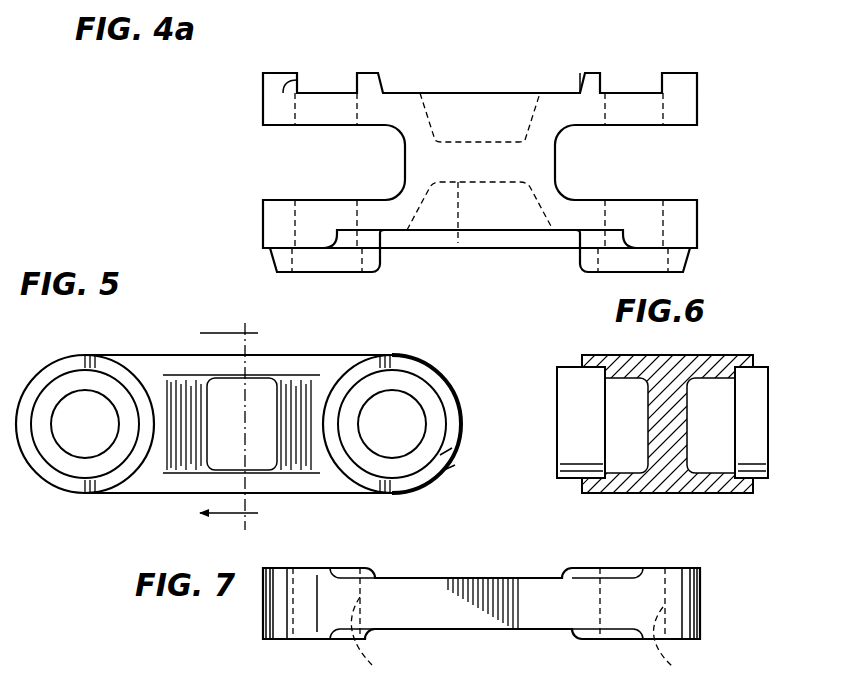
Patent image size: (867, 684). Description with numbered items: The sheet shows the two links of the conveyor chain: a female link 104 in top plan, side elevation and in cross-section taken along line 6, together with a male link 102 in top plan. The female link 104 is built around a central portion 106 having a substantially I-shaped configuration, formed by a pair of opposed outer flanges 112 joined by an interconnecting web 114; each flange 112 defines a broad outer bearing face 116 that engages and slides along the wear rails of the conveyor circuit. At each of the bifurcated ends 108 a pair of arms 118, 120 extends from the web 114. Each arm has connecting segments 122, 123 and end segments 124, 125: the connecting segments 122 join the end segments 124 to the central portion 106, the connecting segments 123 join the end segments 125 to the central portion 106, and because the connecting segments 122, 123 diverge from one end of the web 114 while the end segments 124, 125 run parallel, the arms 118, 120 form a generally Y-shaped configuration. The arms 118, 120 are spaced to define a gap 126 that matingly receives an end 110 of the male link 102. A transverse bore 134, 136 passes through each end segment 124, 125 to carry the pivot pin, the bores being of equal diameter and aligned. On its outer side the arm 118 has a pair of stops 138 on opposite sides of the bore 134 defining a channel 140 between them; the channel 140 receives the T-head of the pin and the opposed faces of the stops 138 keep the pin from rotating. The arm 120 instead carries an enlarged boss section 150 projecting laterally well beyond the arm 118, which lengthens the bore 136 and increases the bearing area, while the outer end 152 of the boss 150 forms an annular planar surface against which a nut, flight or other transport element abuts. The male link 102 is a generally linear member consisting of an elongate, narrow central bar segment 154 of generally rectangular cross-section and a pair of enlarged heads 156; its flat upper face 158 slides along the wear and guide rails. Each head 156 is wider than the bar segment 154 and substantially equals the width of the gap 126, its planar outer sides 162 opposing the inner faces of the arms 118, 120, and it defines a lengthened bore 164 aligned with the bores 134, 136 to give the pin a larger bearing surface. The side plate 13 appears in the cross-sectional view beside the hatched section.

In FIG. 7, the male link 102 is at (735, 588).
In FIG. 4a, the female link 104 is at (498, 45).
In FIG. 5, the female link 104 is at (88, 525).
In FIG. 4a, the central portion 106 is at (478, 90).
In FIG. 4a, the bifurcated ends 108 is at (270, 70).
In FIG. 7, the end of male link 110 is at (263, 610).
In FIG. 4a, the outer flanges 112 is at (440, 90).
In FIG. 5, the outer flanges 112 is at (275, 355).
In FIG. 6, the outer flanges 112 is at (620, 358).
In FIG. 4a, the web 114 is at (458, 227).
In FIG. 5, the web 114 is at (274, 457).
In FIG. 6, the web 114 is at (672, 437).
In FIG. 4a, the bearing face 116 is at (492, 132).
In FIG. 5, the bearing face 116 is at (182, 355).
In FIG. 6, the bearing face 116 is at (690, 355).
In FIG. 4a, the arm 118 is at (263, 93).
In FIG. 4a, the arm 120 is at (263, 227).
In FIG. 5, the arm 120 is at (40, 372).
In FIG. 4a, the connecting segments 122 is at (428, 113).
In FIG. 6, the connecting segments 122 is at (760, 462).
In FIG. 4a, the connecting segments 123 is at (412, 203).
In FIG. 5, the connecting segments 123 is at (190, 440).
In FIG. 6, the connecting segments 123 is at (617, 433).
In FIG. 4a, the end segments 124 is at (700, 118).
In FIG. 4a, the end segments 125 is at (278, 210).
In FIG. 5, the end segments 125 is at (65, 362).
In FIG. 4a, the gap 126 is at (285, 158).
In FIG. 4a, the transverse bore 134 is at (337, 88).
In FIG. 4a, the transverse bore 136 is at (333, 273).
In FIG. 5, the transverse bore 136 is at (75, 433).
In FIG. 4a, the stops 138 is at (283, 88).
In FIG. 4a, the channel 140 is at (308, 82).
In FIG. 4a, the boss section 150 is at (270, 248).
In FIG. 5, the boss section 150 is at (432, 477).
In FIG. 6, the boss section 150 is at (570, 380).
In FIG. 4a, the outer end of boss 152 is at (290, 272).
In FIG. 5, the outer end of boss 152 is at (438, 445).
In FIG. 6, the outer end of boss 152 is at (557, 400).
In FIG. 7, the central bar segment 154 is at (495, 595).
In FIG. 7, the enlarged heads 156 is at (315, 590).
In FIG. 7, the upper face 158 is at (425, 590).
In FIG. 7, the outer sides of head 162 is at (293, 568).
In FIG. 7, the bore 164 is at (528, 638).
In FIG. 6, the side plate 13 is at (760, 428).
In FIG. 5, the section line 6 is at (229, 427).